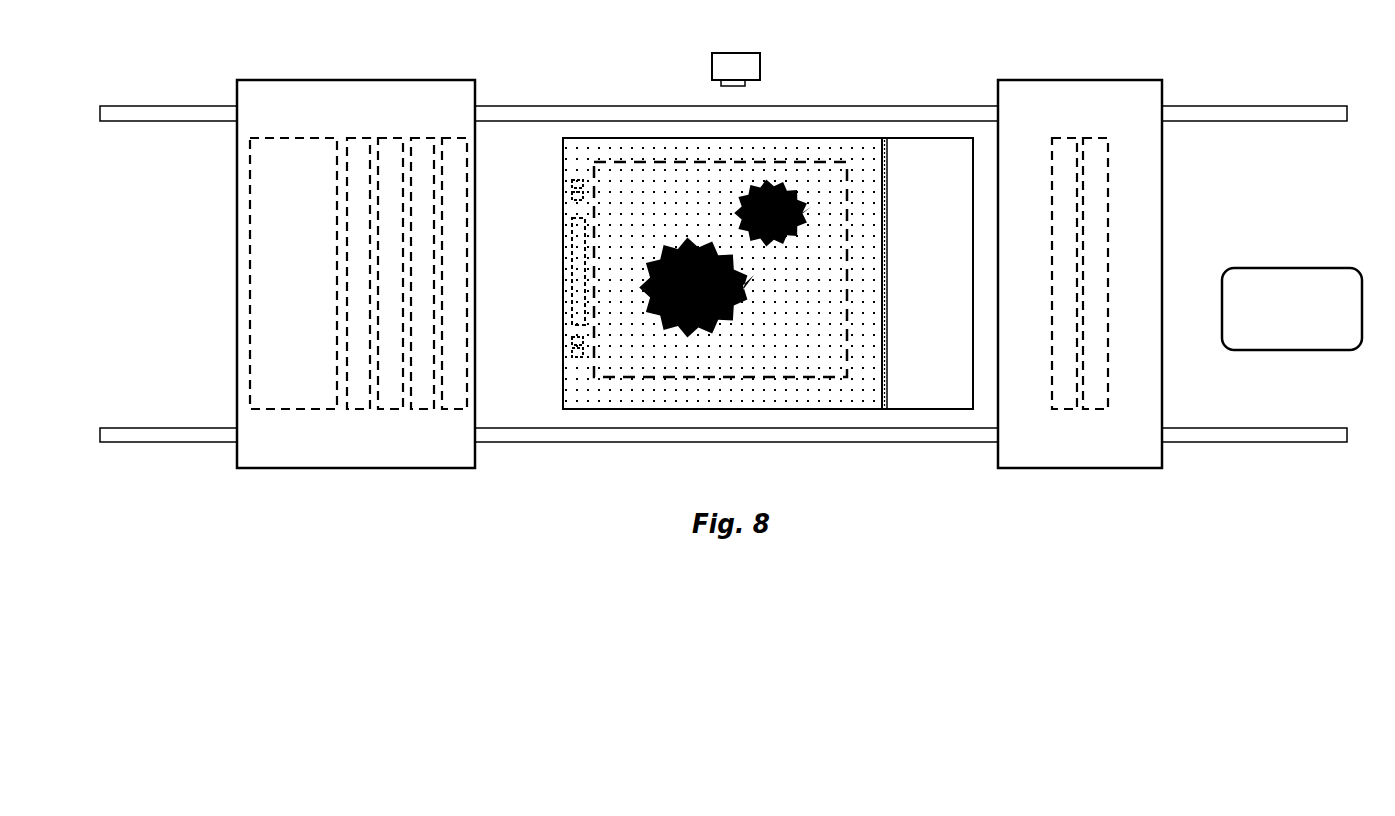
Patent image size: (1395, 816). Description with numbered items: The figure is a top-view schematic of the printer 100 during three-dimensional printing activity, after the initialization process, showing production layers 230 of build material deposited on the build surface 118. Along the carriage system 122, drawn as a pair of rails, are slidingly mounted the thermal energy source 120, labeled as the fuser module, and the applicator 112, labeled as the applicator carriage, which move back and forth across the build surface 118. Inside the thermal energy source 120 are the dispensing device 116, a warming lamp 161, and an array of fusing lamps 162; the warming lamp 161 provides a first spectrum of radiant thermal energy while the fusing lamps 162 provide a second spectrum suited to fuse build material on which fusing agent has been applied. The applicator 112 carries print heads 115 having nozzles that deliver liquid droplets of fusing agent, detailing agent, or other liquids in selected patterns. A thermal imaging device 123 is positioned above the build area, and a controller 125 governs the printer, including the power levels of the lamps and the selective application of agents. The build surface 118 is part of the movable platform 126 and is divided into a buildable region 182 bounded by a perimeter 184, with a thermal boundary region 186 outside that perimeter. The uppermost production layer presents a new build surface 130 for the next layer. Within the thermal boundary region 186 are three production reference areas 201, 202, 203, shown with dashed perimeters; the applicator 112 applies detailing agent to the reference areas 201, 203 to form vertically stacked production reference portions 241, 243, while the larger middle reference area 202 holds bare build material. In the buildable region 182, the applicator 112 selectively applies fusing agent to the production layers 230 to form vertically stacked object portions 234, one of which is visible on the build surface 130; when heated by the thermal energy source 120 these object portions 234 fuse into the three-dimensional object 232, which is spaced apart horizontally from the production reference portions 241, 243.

The printer 100 is at (136, 97).
The applicator 112 is at (1068, 82).
The print heads 115 is at (1058, 412).
The dispensing device 116 is at (282, 412).
The build surface 118 is at (858, 128).
The thermal energy source 120 is at (272, 82).
The carriage system 122 is at (157, 106).
The thermal imaging device 123 is at (712, 74).
The controller 125 is at (1277, 268).
The movable platform 126 is at (793, 138).
The build surface 130 is at (634, 175).
The warming lamp 161 is at (354, 412).
The fusing lamps 162 is at (445, 412).
The buildable region 182 is at (832, 187).
The perimeter 184 is at (848, 218).
The thermal boundary region 186 is at (572, 380).
The production reference area 201 is at (574, 182).
The production reference area 202 is at (573, 248).
The production reference area 203 is at (574, 339).
The production layers 230 is at (594, 148).
The 3D object 232 is at (693, 312).
The object portions 234 is at (720, 312).
The production reference portion 241 is at (574, 197).
The production reference portion 243 is at (574, 353).